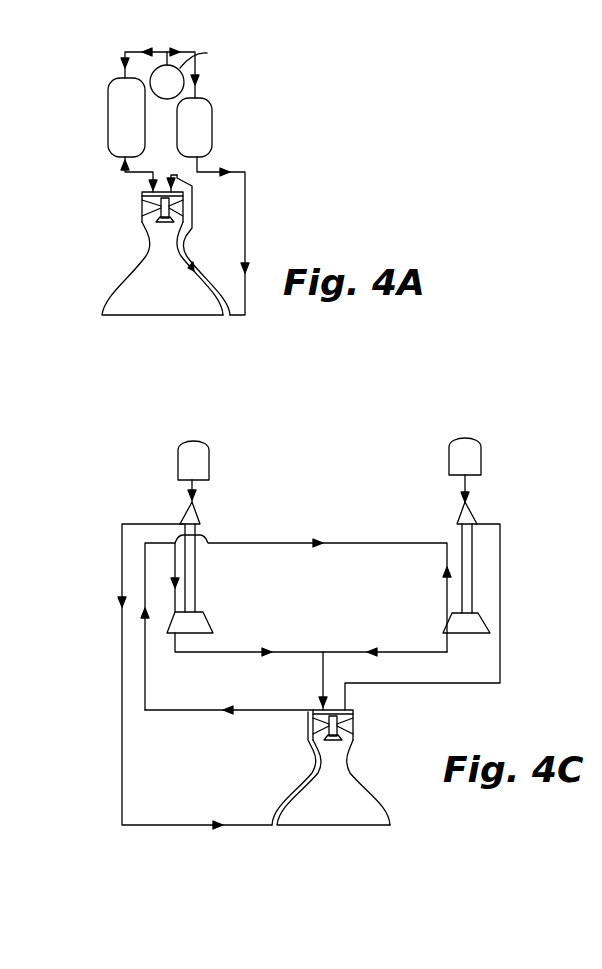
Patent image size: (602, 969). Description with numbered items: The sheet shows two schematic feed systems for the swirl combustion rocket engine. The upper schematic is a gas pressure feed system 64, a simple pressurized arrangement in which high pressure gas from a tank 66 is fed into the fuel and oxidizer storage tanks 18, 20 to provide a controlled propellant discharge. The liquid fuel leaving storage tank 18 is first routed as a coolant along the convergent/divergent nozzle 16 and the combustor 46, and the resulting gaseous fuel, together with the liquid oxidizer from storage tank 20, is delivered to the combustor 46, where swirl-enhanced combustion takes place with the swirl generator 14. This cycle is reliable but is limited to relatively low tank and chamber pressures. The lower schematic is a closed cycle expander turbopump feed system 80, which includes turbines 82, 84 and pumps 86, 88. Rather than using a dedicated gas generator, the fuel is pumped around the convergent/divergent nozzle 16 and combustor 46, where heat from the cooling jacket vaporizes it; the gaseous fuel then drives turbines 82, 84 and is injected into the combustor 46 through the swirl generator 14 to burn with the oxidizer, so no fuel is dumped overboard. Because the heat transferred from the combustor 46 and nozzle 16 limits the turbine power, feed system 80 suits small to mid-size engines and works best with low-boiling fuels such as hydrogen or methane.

In FIG. 4A, the swirl generator 14 is at (142, 202).
In FIG. 4C, the swirl generator 14 is at (355, 712).
In FIG. 4A, the convergent/divergent nozzle 16 is at (130, 302).
In FIG. 4C, the convergent/divergent nozzle 16 is at (378, 787).
In FIG. 4A, the storage tank 18 is at (203, 143).
In FIG. 4C, the storage tank 18 is at (452, 455).
In FIG. 4A, the storage tank 20 is at (110, 135).
In FIG. 4C, the storage tank 20 is at (210, 450).
In FIG. 4A, the combustor 46 is at (141, 226).
In FIG. 4C, the combustor 46 is at (296, 762).
In FIG. 4A, the gas pressure feed system 64 is at (308, 108).
In FIG. 4A, the high pressure gas tank 66 is at (160, 75).
In FIG. 4C, the closed cycle expander turbopump feed system 80 is at (507, 567).
In FIG. 4C, the turbine 82 is at (199, 622).
In FIG. 4C, the turbine 84 is at (477, 627).
In FIG. 4C, the pump 86 is at (460, 520).
In FIG. 4C, the pump 88 is at (183, 518).